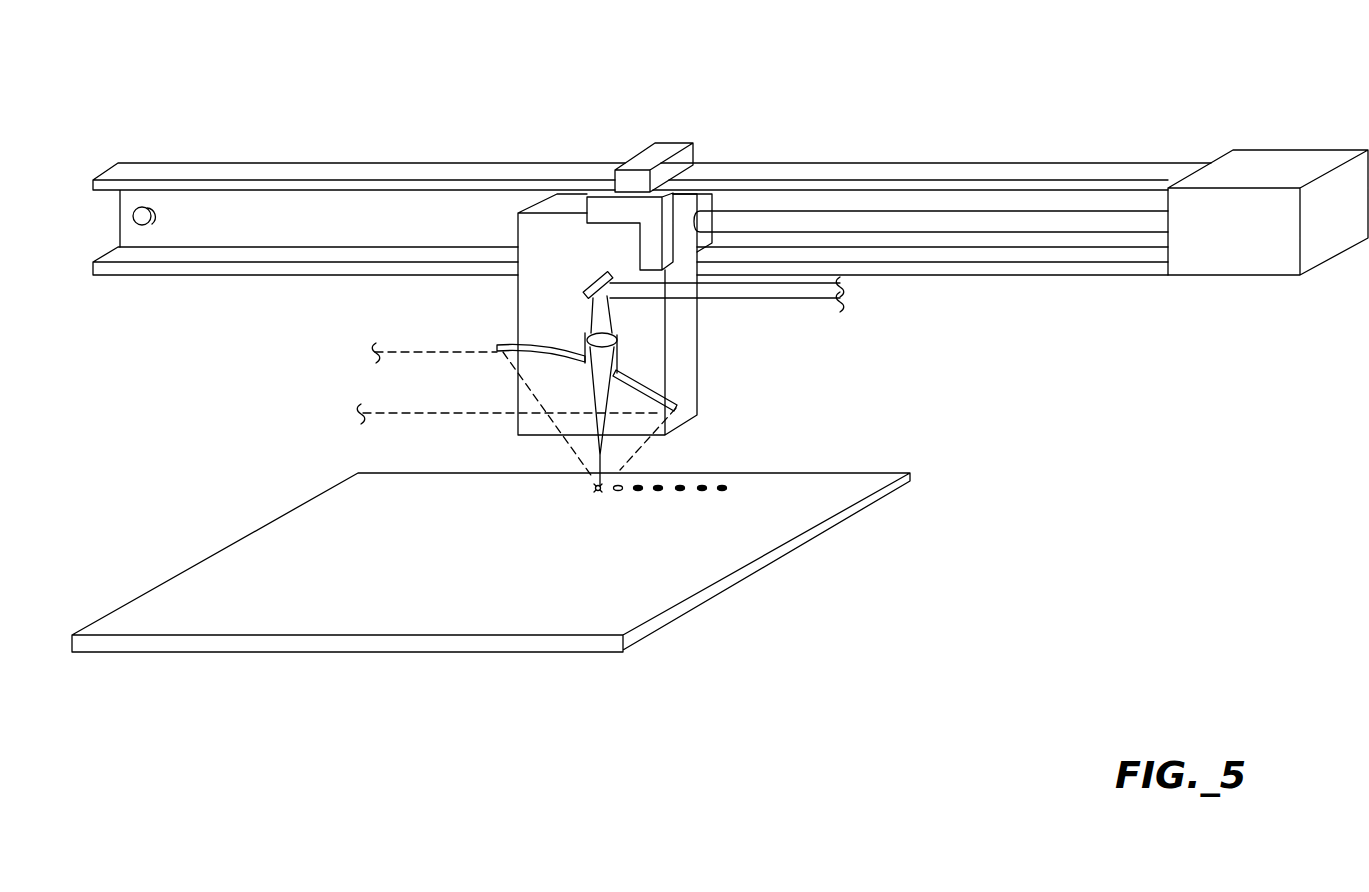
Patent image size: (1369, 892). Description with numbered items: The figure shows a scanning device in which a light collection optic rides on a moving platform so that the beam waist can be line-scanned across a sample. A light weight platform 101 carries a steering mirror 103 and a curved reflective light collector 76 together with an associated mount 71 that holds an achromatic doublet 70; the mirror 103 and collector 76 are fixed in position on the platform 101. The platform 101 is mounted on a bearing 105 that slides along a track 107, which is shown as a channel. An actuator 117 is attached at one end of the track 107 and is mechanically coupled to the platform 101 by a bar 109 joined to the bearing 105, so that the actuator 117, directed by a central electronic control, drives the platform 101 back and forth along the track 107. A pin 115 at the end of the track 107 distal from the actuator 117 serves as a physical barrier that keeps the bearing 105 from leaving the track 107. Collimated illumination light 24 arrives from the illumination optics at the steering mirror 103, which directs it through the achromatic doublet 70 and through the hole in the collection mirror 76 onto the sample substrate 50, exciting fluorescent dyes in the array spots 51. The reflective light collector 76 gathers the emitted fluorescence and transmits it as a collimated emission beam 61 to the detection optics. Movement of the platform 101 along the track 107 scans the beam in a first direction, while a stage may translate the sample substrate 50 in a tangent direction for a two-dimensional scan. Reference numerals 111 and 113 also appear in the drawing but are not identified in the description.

The track 107 is at (325, 168).
The bar 109 is at (928, 221).
The bearing 105 is at (715, 202).
The drive block 111 is at (687, 162).
The mounting bracket 113 is at (597, 208).
The platform 101 is at (517, 297).
The steering mirror 103 is at (592, 293).
The collimated illumination light 24 is at (772, 299).
The achromatic doublet 70 is at (608, 332).
The mount 71 is at (617, 343).
The collimated emission beam 61 is at (438, 387).
The curved reflective light collector 76 is at (677, 405).
The array spots 51 is at (623, 485).
The sample substrate 50 is at (813, 478).
The actuator 117 is at (1262, 162).
The pin 115 is at (122, 217).